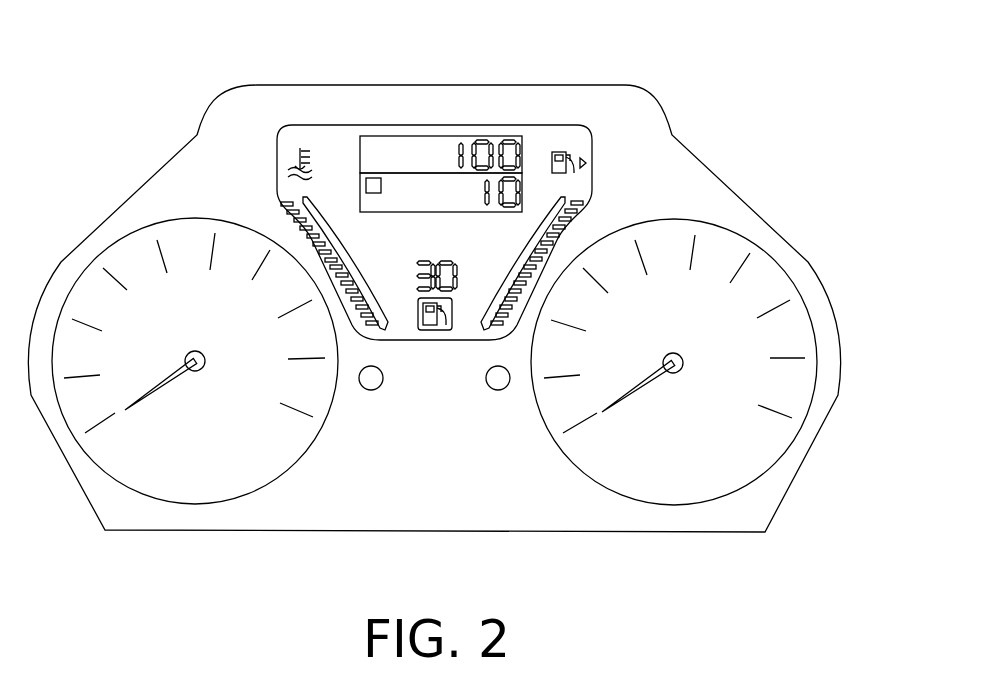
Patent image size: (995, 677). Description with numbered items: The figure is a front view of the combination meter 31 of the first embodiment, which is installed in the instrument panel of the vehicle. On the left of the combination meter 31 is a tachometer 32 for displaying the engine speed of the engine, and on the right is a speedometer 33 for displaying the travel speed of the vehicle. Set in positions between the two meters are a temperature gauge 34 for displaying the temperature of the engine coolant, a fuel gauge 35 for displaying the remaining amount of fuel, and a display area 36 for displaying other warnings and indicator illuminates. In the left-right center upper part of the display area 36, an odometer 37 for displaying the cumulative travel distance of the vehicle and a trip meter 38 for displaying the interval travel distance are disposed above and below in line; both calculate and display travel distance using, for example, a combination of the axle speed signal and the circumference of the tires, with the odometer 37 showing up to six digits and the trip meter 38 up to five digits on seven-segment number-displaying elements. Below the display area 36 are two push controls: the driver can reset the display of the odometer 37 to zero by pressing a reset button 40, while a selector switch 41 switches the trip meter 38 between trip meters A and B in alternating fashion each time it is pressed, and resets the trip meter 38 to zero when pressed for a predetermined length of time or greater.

The combination meter 31 is at (760, 175).
The tachometer 32 is at (123, 260).
The speedometer 33 is at (768, 283).
The temperature gauge 34 is at (304, 200).
The fuel gauge 35 is at (565, 198).
The display area 36 is at (515, 120).
The odometer 37 is at (434, 152).
The trip meter 38 is at (399, 192).
The reset button 40 is at (371, 380).
The selector switch 41 is at (497, 378).